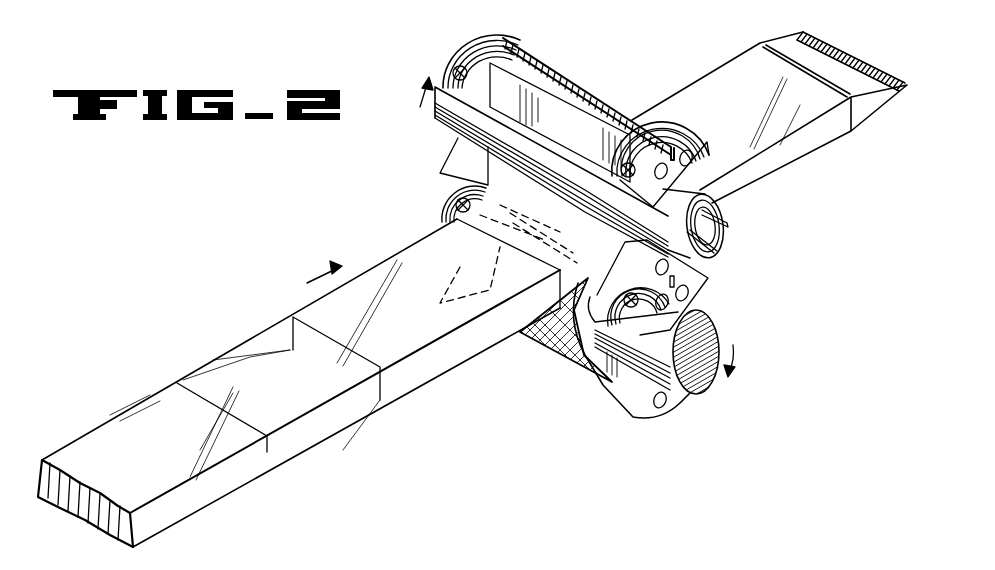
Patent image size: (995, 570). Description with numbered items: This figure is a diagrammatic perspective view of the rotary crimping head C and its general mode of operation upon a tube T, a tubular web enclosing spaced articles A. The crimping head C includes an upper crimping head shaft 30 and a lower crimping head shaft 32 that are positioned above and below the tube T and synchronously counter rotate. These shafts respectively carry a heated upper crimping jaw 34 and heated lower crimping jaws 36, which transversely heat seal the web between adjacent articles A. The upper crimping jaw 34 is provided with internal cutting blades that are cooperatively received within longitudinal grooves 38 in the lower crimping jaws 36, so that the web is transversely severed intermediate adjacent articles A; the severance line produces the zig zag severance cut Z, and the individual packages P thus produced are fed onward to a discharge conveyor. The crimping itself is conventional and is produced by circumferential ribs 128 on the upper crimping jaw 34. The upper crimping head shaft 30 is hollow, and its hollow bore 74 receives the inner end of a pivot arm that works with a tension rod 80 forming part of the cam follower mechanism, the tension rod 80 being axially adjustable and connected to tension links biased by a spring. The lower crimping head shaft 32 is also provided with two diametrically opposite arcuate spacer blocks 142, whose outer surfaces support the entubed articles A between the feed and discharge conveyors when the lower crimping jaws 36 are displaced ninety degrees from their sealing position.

The tube T is at (238, 350).
The articles A is at (297, 328).
The individual packages P is at (720, 70).
The zig zag severance cut Z is at (848, 43).
The crimping head C is at (438, 137).
The upper crimping head shaft 30 is at (722, 205).
The lower crimping head shaft 32 is at (718, 333).
The upper crimping jaw 34 is at (690, 130).
The lower crimping jaw 36 is at (681, 303).
The longitudinal grooves 38 is at (675, 280).
The hollow bore 74 is at (727, 222).
The tension rod 80 is at (718, 250).
The circumferential ribs 128 is at (545, 118).
The arcuate spacer blocks 142 is at (530, 333).